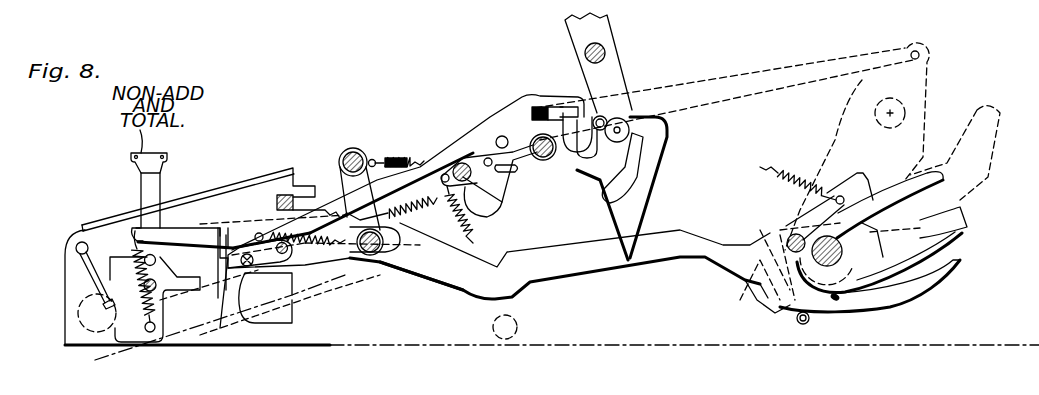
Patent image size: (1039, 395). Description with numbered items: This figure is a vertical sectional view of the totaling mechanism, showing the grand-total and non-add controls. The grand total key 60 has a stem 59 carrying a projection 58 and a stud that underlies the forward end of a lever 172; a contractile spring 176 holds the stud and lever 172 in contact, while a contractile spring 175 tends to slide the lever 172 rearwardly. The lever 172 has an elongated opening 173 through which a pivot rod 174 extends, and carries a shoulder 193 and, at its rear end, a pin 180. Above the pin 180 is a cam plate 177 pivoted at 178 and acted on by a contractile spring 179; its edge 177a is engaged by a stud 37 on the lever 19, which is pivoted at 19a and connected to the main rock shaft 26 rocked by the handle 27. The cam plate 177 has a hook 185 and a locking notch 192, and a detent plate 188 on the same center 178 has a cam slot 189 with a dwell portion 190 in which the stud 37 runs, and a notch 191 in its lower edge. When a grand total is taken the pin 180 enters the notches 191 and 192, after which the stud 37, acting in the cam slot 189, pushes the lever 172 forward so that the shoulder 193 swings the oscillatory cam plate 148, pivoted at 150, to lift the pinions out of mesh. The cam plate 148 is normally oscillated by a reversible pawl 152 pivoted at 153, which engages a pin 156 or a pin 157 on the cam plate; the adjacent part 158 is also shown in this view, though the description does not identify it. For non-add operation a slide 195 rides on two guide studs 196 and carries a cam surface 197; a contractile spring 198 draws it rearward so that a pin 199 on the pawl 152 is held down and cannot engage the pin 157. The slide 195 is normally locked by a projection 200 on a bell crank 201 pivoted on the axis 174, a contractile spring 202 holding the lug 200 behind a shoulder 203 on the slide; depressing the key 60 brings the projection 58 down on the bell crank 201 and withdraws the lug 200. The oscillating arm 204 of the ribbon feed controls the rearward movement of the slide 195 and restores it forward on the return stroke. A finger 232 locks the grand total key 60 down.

The grand total key 60 is at (167, 154).
The stem 59 is at (160, 183).
The shoulder 203 is at (230, 228).
The guide studs 196 is at (284, 195).
The finger 232 is at (92, 270).
The projection 58 is at (190, 277).
The contractile spring 176 is at (135, 302).
The handle 27 is at (198, 322).
The projection 200 is at (232, 328).
The bell crank 201 is at (312, 262).
The contractile spring 198 is at (352, 262).
The pivot rod 174 is at (384, 270).
The elongated opening 173 is at (385, 260).
The contractile spring 175 is at (405, 213).
The shoulder 193 is at (510, 258).
The main rock shaft 26 is at (505, 340).
The contractile spring 202 is at (397, 158).
The pivot 153 is at (462, 172).
The slide 195 is at (472, 138).
The cam surface 197 is at (477, 133).
The pin 157 is at (503, 133).
The oscillating arm 204 is at (598, 78).
The pin 156 is at (605, 118).
The cam plate 148 is at (630, 118).
The plate 158 is at (560, 160).
The pivot 150 is at (542, 160).
The pin 199 is at (503, 175).
The reversible pawl 152 is at (487, 198).
The lever 172 is at (462, 285).
The lever 19 is at (842, 127).
The pivot 19a is at (905, 113).
The contractile spring 179 is at (798, 175).
The hook 185 is at (877, 168).
The stud 37 is at (813, 240).
The notch 191 is at (795, 240).
The pivot 178 is at (826, 263).
The cam slot 189 is at (862, 230).
The detent plate 188 is at (953, 220).
The dwell portion 190 is at (958, 247).
The cam plate 177 is at (890, 307).
The edge 177a is at (913, 288).
The pin 180 is at (803, 325).
The locking notch 192 is at (757, 298).